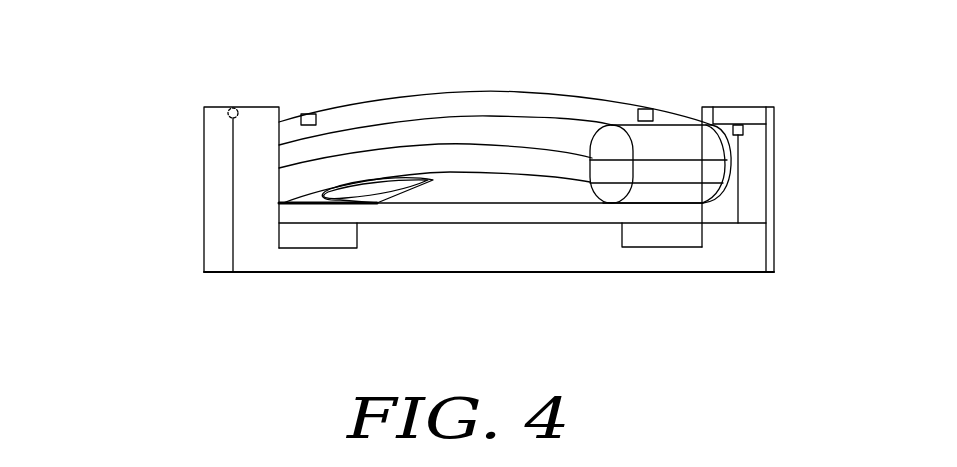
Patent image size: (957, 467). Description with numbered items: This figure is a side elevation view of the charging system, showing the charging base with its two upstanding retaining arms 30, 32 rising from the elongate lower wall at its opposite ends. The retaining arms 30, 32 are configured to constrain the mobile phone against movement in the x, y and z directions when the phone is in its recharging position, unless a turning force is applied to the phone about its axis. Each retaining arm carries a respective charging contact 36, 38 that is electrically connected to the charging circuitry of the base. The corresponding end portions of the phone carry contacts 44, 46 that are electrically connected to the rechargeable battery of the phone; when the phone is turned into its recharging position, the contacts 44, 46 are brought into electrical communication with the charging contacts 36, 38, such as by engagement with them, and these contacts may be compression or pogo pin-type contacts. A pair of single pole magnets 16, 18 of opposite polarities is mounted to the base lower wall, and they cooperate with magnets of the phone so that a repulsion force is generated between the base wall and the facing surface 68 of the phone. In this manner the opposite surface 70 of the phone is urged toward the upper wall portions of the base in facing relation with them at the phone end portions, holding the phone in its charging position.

The retaining arm 30 is at (181, 155).
The retaining arm 32 is at (778, 162).
The charging contact 36 is at (231, 109).
The charging contact 38 is at (738, 125).
The contact 44 is at (302, 113).
The contact 46 is at (648, 108).
The opposite surface of the phone 70 is at (590, 100).
The single pole magnet 16 is at (292, 249).
The single pole magnet 18 is at (690, 247).
The facing surface of the phone 68 is at (440, 178).